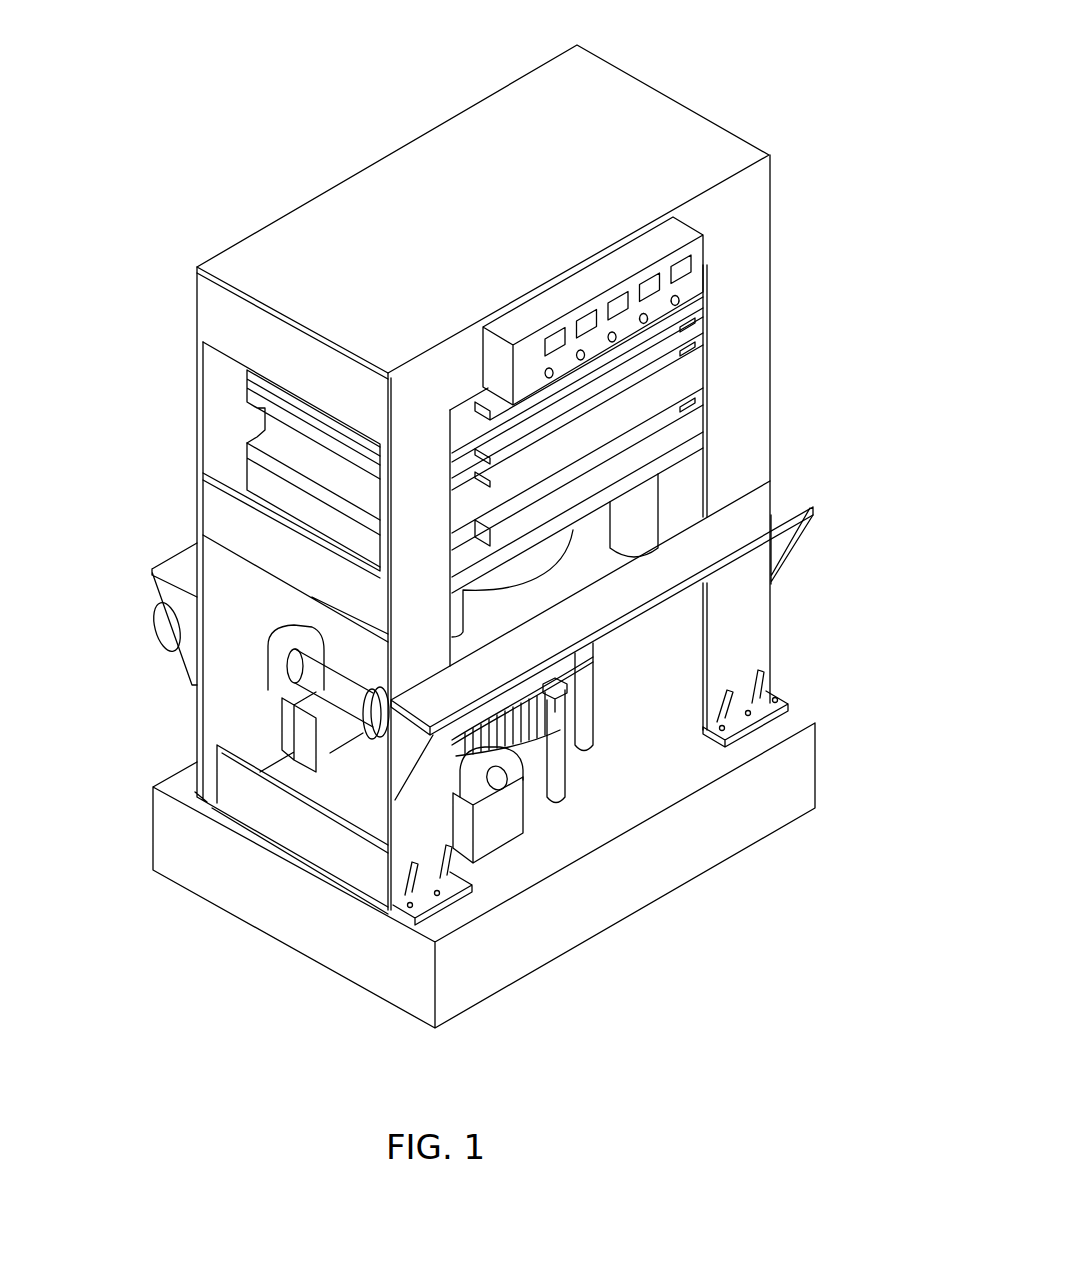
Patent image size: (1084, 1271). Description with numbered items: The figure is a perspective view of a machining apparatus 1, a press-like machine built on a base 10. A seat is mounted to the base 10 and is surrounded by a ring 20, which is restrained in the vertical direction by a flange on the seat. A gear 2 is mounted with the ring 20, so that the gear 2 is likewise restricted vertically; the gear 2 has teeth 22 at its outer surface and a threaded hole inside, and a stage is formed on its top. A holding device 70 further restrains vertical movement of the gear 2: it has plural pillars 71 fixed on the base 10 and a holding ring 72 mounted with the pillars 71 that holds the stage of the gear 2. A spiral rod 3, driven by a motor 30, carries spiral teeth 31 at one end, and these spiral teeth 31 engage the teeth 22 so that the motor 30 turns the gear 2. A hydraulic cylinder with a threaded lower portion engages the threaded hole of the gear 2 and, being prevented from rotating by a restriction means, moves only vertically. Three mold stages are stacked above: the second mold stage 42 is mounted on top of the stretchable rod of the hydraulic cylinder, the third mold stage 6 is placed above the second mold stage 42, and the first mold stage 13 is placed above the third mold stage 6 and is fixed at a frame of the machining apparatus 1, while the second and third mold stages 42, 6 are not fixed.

The machining apparatus 1 is at (787, 326).
The first mold stage 13 is at (472, 408).
The third mold stage 6 is at (640, 377).
The second mold stage 42 is at (637, 432).
The holding device 70 is at (610, 663).
The pillars 71 is at (587, 710).
The holding ring 72 is at (573, 673).
The gear 2 is at (577, 822).
The ring 20 is at (533, 788).
The teeth 22 is at (535, 757).
The base 10 is at (712, 765).
The motor 30 is at (163, 628).
The spiral rod 3 is at (347, 697).
The spiral teeth 31 is at (378, 710).